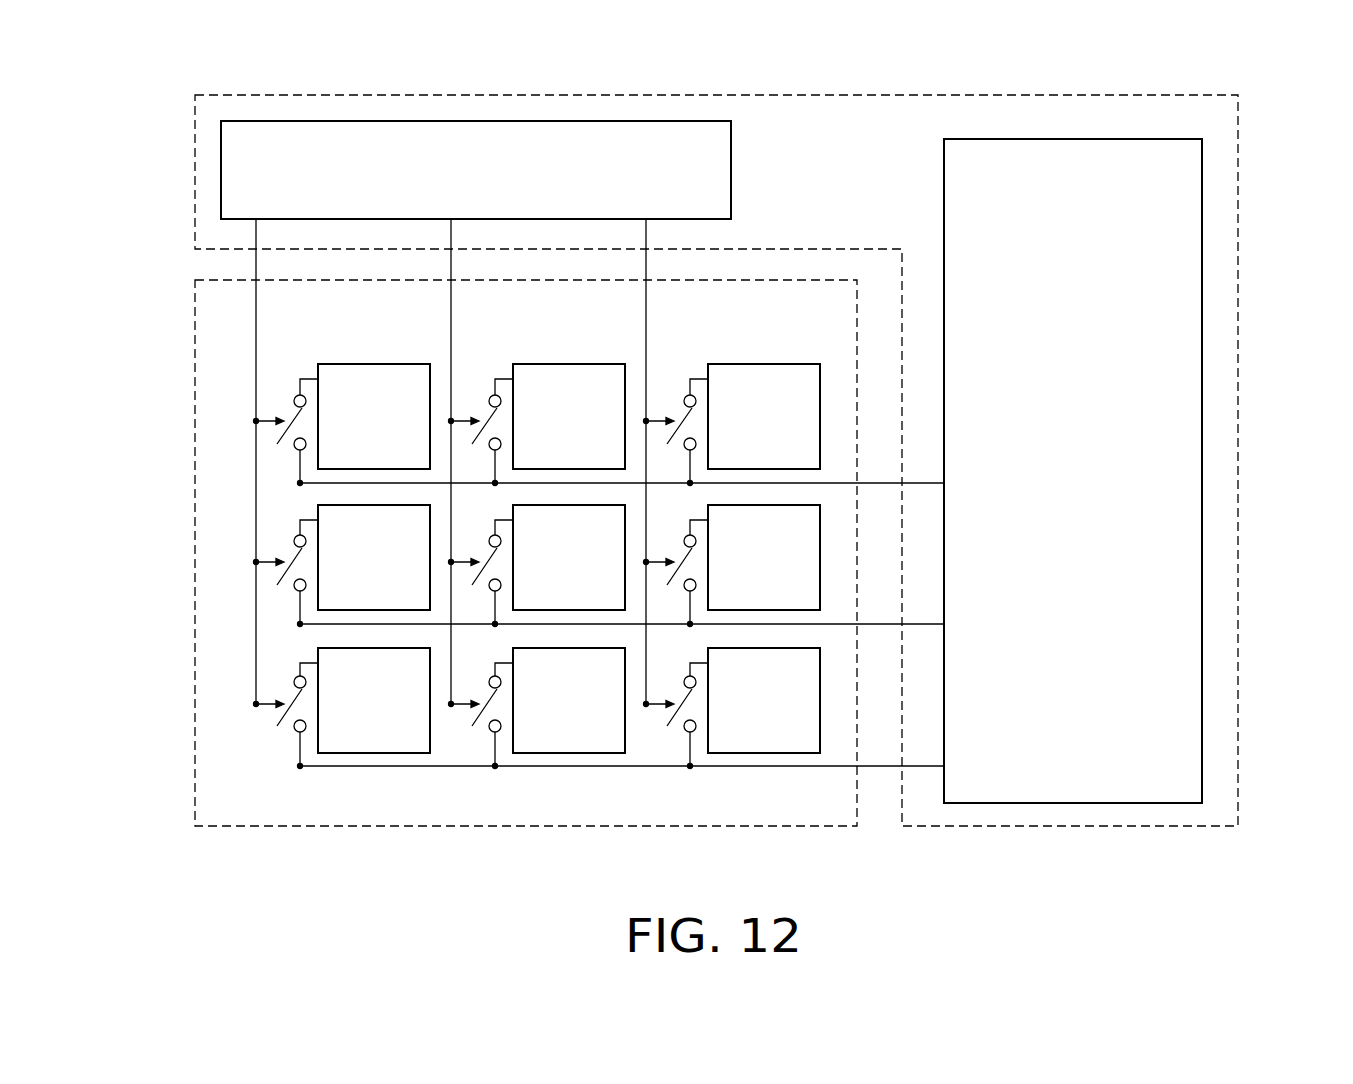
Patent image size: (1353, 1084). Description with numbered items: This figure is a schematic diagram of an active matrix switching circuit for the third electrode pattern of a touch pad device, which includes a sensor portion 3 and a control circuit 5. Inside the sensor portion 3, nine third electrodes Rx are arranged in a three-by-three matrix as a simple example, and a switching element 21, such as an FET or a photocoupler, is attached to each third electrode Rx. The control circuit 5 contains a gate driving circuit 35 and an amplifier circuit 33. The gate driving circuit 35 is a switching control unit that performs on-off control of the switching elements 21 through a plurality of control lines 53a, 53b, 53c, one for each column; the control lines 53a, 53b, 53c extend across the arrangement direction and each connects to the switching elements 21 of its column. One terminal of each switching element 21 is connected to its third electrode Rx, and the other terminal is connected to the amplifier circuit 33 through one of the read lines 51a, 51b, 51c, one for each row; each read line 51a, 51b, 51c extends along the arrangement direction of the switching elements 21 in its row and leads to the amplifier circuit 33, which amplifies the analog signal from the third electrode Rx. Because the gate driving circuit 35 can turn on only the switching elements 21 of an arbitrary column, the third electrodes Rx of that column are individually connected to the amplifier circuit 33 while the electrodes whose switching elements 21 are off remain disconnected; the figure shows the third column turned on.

The control circuit 5 is at (883, 94).
The gate driving circuit 35 is at (307, 130).
The amplifier circuit 33 is at (1203, 207).
The sensor portion 3 is at (195, 337).
The control line 53a is at (256, 262).
The control line 53b is at (451, 302).
The control line 53c is at (646, 302).
The read line 51a is at (837, 483).
The read line 51b is at (837, 624).
The read line 51c is at (837, 766).
The switching element 21 is at (283, 405).
The third electrode Rx is at (276, 463).